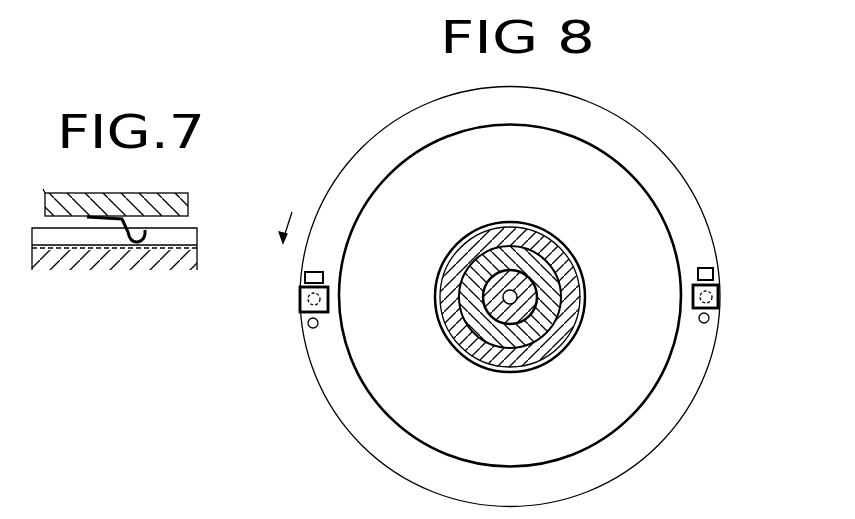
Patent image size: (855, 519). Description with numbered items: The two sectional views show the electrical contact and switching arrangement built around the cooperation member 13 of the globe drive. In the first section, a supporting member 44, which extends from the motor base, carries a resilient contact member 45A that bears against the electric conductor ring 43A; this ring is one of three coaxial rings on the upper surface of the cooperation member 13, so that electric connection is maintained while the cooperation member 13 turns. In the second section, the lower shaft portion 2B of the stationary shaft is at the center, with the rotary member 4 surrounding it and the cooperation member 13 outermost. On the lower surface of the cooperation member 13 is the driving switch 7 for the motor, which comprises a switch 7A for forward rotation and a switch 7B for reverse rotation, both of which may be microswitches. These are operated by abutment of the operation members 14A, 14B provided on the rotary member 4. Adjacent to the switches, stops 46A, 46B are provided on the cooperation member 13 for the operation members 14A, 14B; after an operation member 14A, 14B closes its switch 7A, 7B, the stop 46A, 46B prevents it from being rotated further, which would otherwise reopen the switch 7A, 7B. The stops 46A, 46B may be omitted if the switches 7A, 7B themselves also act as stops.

In FIG. 7, the supporting member 44 is at (82, 207).
In FIG. 7, the resilient contact member 45A is at (145, 229).
In FIG. 7, the cooperation member 13 is at (100, 262).
In FIG. 8, the cooperation member 13 is at (372, 137).
In FIG. 7, the electric conductor ring 43A is at (176, 262).
In FIG. 8, the rotary member 4 is at (368, 363).
In FIG. 8, the lower shaft portion 2B is at (447, 262).
In FIG. 8, the driving switch 7 is at (329, 297).
In FIG. 8, the switch for forward rotation 7A is at (302, 297).
In FIG. 8, the switch for reverse rotation 7B is at (718, 292).
In FIG. 8, the operation member 14A is at (305, 272).
In FIG. 8, the operation member 14B is at (702, 268).
In FIG. 8, the stop 46A is at (312, 329).
In FIG. 8, the stop 46B is at (705, 325).